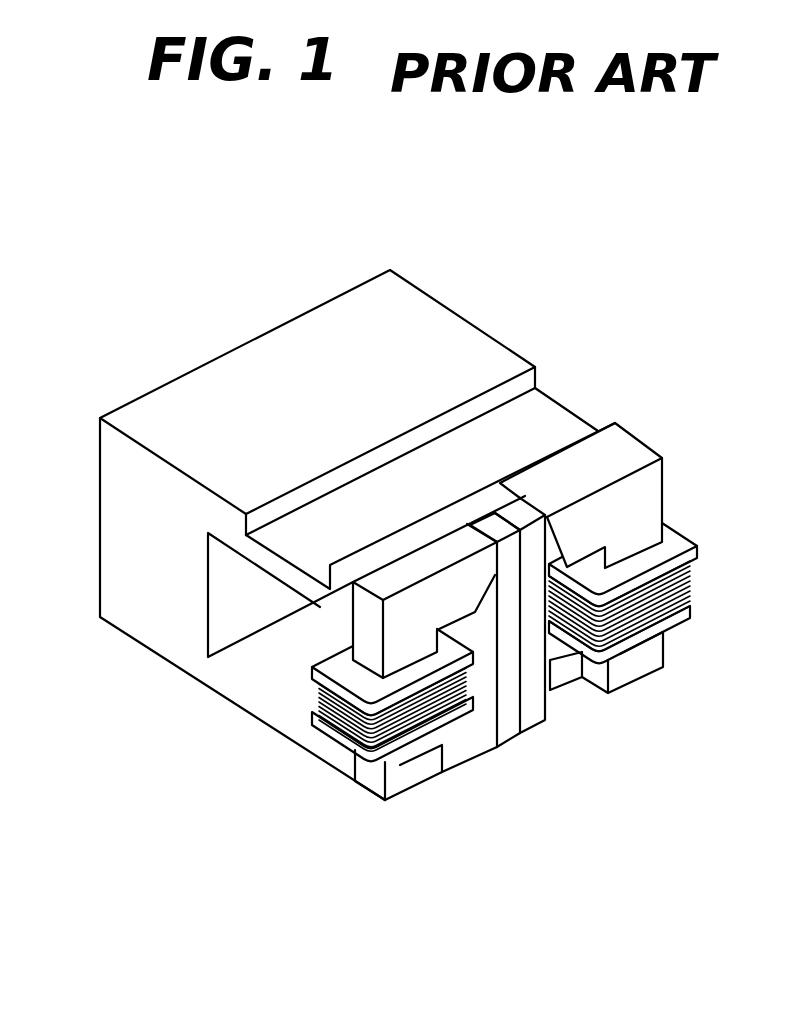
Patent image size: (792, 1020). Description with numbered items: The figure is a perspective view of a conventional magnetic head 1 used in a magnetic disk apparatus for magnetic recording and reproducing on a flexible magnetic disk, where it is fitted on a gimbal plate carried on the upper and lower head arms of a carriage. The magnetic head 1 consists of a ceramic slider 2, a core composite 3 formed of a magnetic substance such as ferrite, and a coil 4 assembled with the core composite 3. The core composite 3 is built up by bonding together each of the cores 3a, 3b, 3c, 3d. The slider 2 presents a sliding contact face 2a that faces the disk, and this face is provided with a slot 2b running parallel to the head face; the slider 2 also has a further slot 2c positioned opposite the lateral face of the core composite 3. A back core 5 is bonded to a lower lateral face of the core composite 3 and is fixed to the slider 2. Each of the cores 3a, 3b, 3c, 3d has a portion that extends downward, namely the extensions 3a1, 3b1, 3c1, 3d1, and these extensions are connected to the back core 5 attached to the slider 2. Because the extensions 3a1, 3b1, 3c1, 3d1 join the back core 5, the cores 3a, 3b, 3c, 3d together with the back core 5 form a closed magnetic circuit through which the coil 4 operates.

The magnetic head 1 is at (597, 213).
The ceramic slider 2 is at (360, 522).
The sliding contact face 2a is at (440, 323).
The slot 2b is at (550, 413).
The slot 2c is at (270, 662).
The core composite 3 is at (509, 621).
The core 3a is at (398, 568).
The core 3b is at (490, 527).
The core 3c is at (522, 512).
The core 3d is at (637, 455).
The extension 3a1 is at (398, 783).
The extension 3b1 is at (507, 730).
The extension 3c1 is at (540, 718).
The extension 3d1 is at (645, 668).
The coil 4 is at (443, 715).
The back core 5 is at (338, 760).